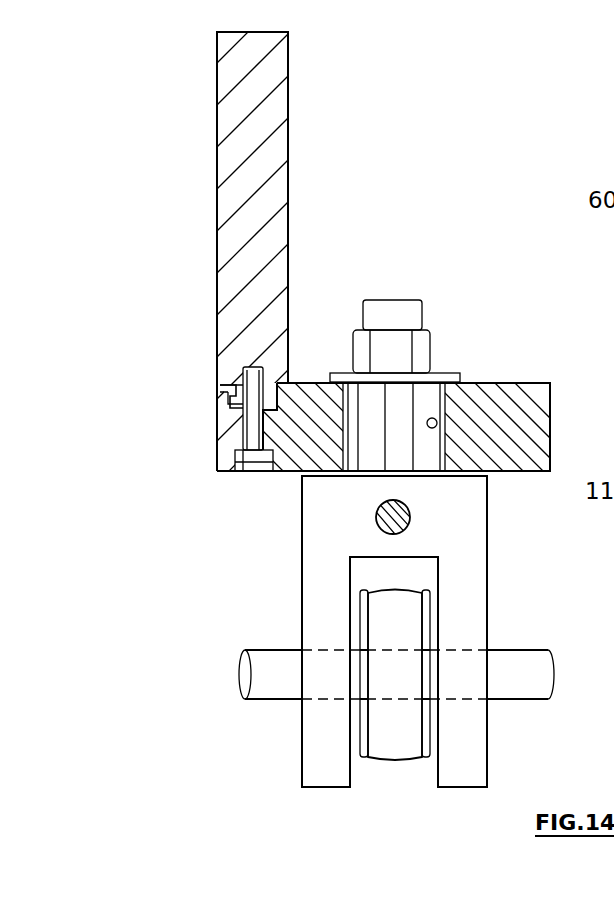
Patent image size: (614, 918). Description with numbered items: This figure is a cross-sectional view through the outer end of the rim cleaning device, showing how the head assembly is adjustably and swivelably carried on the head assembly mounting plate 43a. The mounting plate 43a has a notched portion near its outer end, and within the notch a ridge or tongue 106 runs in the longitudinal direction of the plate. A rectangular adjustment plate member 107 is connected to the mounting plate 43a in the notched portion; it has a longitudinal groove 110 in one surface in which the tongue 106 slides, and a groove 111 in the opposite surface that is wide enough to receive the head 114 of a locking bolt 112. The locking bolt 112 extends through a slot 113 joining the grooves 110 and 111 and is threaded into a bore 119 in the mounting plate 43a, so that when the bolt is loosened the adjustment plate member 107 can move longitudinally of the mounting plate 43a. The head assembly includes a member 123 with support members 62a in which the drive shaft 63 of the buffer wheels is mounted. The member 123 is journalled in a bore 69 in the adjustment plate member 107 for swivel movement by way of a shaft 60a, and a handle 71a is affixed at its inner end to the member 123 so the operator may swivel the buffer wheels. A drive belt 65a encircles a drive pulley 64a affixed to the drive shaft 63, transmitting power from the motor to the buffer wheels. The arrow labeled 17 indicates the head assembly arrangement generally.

The head assembly mounting plate 43a is at (281, 94).
The adjustment plate member 107 is at (500, 394).
The shaft 60a is at (412, 300).
The bore 69 is at (440, 421).
The bore 119 is at (254, 366).
The tongue 106 is at (240, 384).
The longitudinal groove 110 is at (232, 397).
The locking bolt 112 is at (242, 436).
The slot 113 is at (259, 458).
The groove 111 is at (240, 474).
The head 114 is at (248, 477).
The support member 62a is at (318, 602).
The carriage assembly 17 is at (488, 626).
The member 123 is at (298, 765).
The handle 71a is at (412, 517).
The drive belt 65a is at (384, 759).
The drive pulley 64a is at (426, 759).
The drive shaft 63 is at (273, 689).